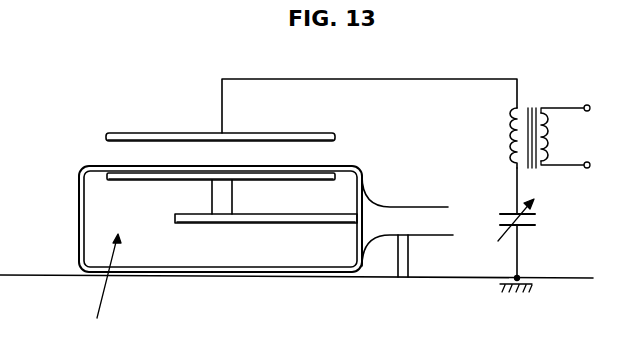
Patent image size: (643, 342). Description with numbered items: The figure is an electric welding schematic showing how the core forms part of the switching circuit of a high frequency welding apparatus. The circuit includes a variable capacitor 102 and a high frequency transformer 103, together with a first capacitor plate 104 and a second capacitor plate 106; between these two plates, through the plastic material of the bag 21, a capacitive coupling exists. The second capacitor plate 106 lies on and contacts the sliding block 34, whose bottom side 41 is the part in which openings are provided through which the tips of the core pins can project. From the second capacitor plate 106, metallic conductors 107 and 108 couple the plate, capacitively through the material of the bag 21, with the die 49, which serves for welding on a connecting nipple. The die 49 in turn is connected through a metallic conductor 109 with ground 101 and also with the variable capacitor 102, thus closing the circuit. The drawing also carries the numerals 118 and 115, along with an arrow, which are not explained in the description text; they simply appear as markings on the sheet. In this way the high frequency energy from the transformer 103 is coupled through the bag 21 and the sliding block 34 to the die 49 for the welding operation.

The sheet reference 118 is at (197, 10).
The bag 21 is at (77, 217).
The first capacitor plate 104 is at (310, 137).
The second capacitor plate 106 is at (320, 177).
The metallic conductor 107 is at (223, 192).
The metallic conductor 108 is at (293, 222).
The sliding block 34 is at (145, 253).
The bottom side 41 is at (317, 259).
The flow direction arrow 115 is at (103, 292).
The die 49 is at (414, 213).
The metallic conductor 109 is at (402, 253).
The ground 101 is at (553, 280).
The high frequency transformer 103 is at (532, 172).
The variable capacitor 102 is at (533, 220).